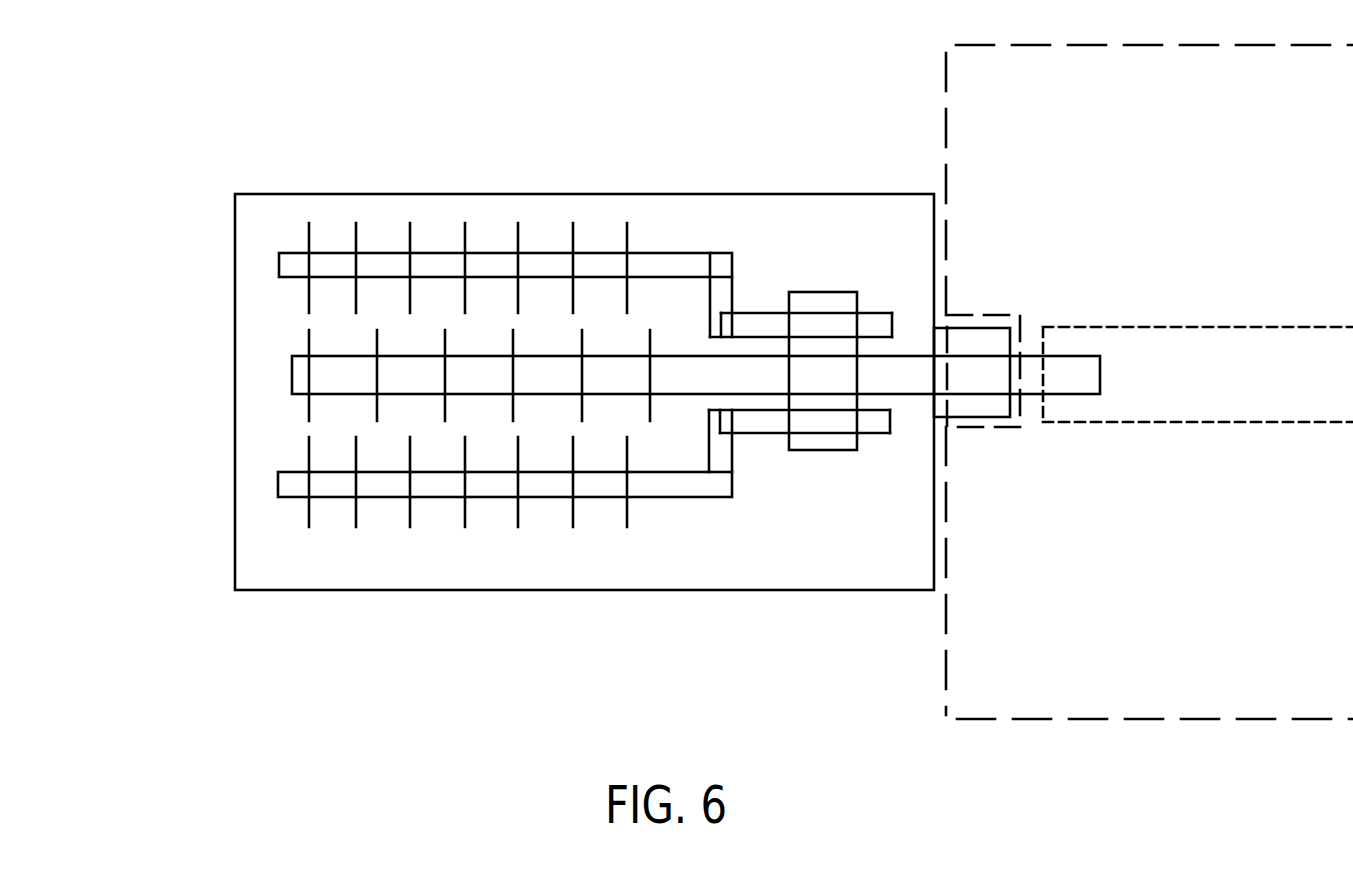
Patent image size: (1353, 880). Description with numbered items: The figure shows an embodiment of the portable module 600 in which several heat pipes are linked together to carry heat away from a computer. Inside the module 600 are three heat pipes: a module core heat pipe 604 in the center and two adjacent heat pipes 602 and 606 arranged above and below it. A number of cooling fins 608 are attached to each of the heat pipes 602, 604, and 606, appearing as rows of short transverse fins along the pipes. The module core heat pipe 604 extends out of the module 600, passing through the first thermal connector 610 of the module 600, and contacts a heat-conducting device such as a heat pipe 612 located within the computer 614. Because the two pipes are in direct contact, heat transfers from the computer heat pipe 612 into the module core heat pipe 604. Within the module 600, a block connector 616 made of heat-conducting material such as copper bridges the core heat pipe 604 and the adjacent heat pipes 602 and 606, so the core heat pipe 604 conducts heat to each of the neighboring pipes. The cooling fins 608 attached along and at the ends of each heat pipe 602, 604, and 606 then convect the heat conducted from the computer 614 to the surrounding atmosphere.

The portable module 600 is at (287, 581).
The heat pipe 602 is at (661, 252).
The module core heat pipe 604 is at (292, 373).
The heat pipe 606 is at (279, 487).
The cooling fins 608 is at (310, 225).
The first thermal connector 610 is at (967, 325).
The heat pipe 612 is at (1283, 412).
The computer 614 is at (1310, 708).
The block connector 616 is at (815, 450).